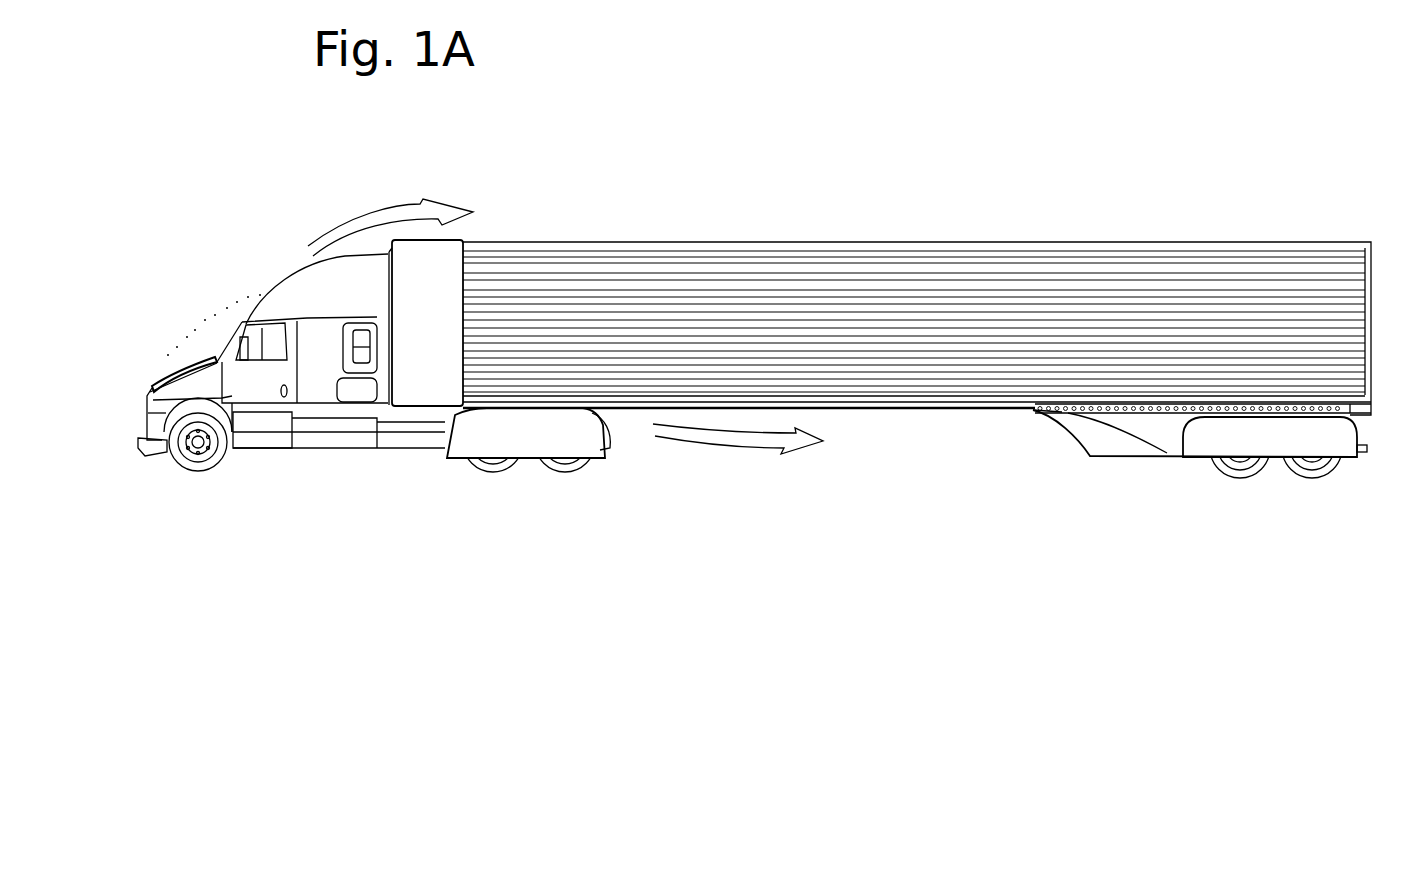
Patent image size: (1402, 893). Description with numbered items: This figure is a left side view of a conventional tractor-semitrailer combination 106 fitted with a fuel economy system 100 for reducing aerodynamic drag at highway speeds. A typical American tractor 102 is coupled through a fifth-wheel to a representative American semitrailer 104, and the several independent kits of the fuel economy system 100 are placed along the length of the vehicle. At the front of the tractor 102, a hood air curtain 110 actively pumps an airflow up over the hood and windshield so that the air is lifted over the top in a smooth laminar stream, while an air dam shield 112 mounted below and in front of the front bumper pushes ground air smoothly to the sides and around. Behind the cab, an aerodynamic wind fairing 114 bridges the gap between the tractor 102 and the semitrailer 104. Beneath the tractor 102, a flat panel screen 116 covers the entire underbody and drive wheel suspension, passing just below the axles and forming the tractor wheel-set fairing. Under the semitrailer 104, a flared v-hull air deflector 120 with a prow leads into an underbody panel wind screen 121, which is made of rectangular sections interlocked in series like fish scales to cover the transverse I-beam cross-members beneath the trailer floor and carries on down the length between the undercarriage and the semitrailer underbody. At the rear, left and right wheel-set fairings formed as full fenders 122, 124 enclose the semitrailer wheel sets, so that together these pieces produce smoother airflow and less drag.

The fuel economy system 100 is at (296, 198).
The tractor 102 is at (593, 558).
The semitrailer 104 is at (1385, 173).
The tractor-semitrailer combination 106 is at (1375, 668).
The hood air curtain 110 is at (157, 383).
The air dam shield 112 is at (153, 450).
The aerodynamic wind fairing 114 is at (440, 337).
The flat panel screen 116 is at (537, 443).
The flared v-hull air deflector 120 is at (1066, 428).
The underbody panel wind screen 121 is at (968, 416).
The left wheel-set fairing full fender 122 is at (1231, 463).
The right wheel-set fairing full fender 124 is at (1307, 446).